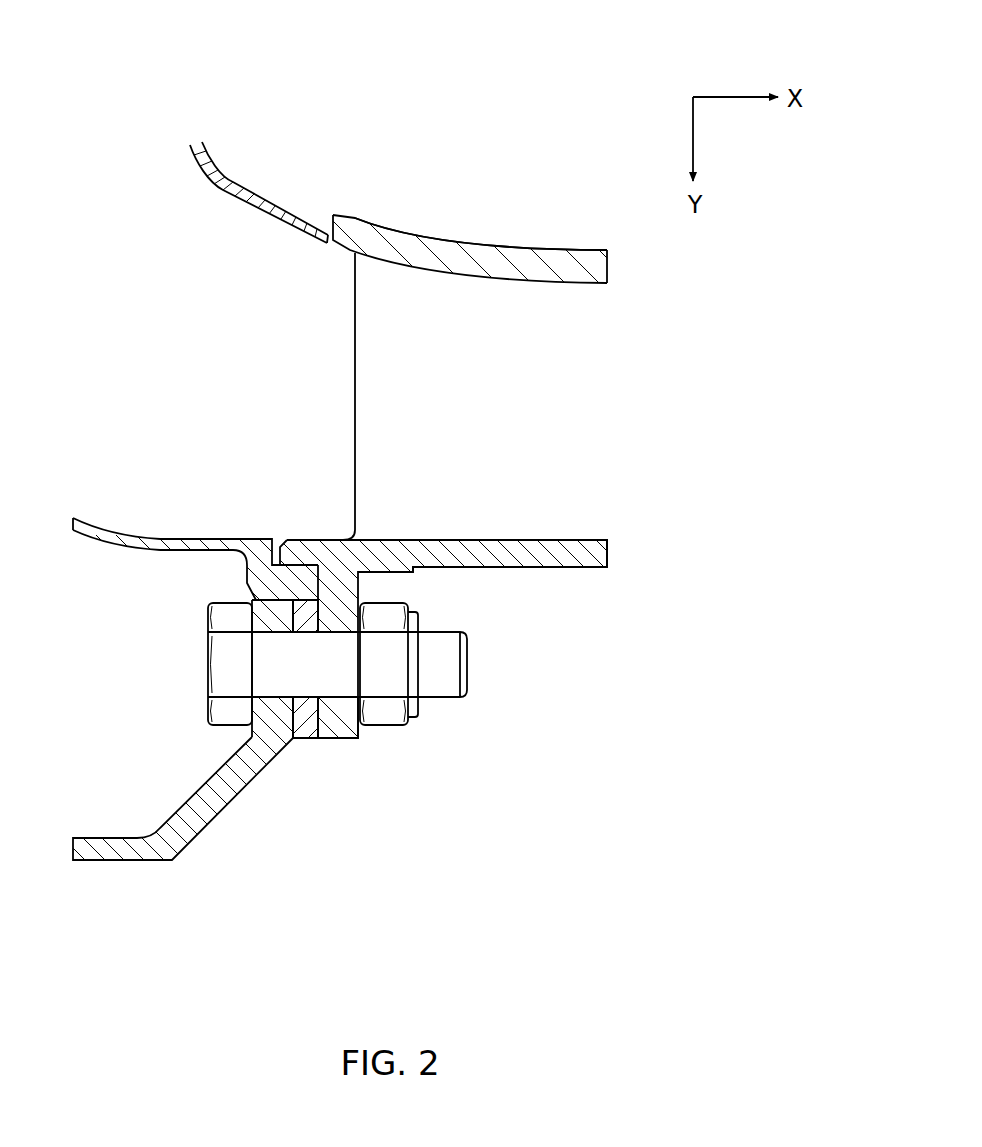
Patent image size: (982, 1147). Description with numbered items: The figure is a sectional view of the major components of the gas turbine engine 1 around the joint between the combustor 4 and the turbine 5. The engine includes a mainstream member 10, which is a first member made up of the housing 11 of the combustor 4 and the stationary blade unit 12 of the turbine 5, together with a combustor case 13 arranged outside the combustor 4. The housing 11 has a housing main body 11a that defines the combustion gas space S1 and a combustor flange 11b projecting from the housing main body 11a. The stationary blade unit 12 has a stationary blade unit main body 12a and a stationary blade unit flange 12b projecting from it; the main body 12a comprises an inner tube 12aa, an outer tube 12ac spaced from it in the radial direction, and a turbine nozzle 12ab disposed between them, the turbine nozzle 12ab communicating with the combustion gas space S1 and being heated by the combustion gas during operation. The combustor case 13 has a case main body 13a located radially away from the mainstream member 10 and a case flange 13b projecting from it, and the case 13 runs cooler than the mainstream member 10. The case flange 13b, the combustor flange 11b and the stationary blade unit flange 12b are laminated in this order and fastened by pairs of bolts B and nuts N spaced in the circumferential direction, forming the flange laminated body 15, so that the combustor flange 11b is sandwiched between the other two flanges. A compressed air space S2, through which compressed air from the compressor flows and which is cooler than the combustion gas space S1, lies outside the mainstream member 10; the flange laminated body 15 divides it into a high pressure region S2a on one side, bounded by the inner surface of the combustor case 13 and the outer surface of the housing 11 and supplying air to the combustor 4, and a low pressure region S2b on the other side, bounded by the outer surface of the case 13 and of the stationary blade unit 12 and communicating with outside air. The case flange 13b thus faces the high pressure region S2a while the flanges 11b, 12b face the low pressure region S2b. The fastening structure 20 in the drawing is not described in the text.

The gas turbine engine 1 is at (412, 123).
The combustor 4 is at (238, 185).
The turbine 5 is at (597, 248).
The mainstream member 10 is at (233, 445).
The housing 11 is at (255, 538).
The housing main body 11a is at (100, 518).
The combustor flange 11b is at (308, 723).
The stationary blade unit 12 is at (323, 538).
The stationary blade unit main body 12a is at (508, 567).
The inner tube 12aa is at (595, 567).
The turbine nozzle 12ab is at (563, 410).
The outer tube 12ac is at (492, 243).
The stationary blade unit flange 12b is at (337, 723).
The combustor case 13 is at (120, 863).
The case main body 13a is at (100, 838).
The case flange 13b is at (273, 723).
The flange laminated body 15 is at (452, 823).
The fastening structure 20 is at (585, 657).
The bolt B is at (207, 618).
The nut N is at (400, 725).
The combustion gas space S1 is at (212, 357).
The compressed air space S2 is at (172, 792).
The high pressure region S2a is at (125, 684).
The low pressure region S2b is at (586, 734).